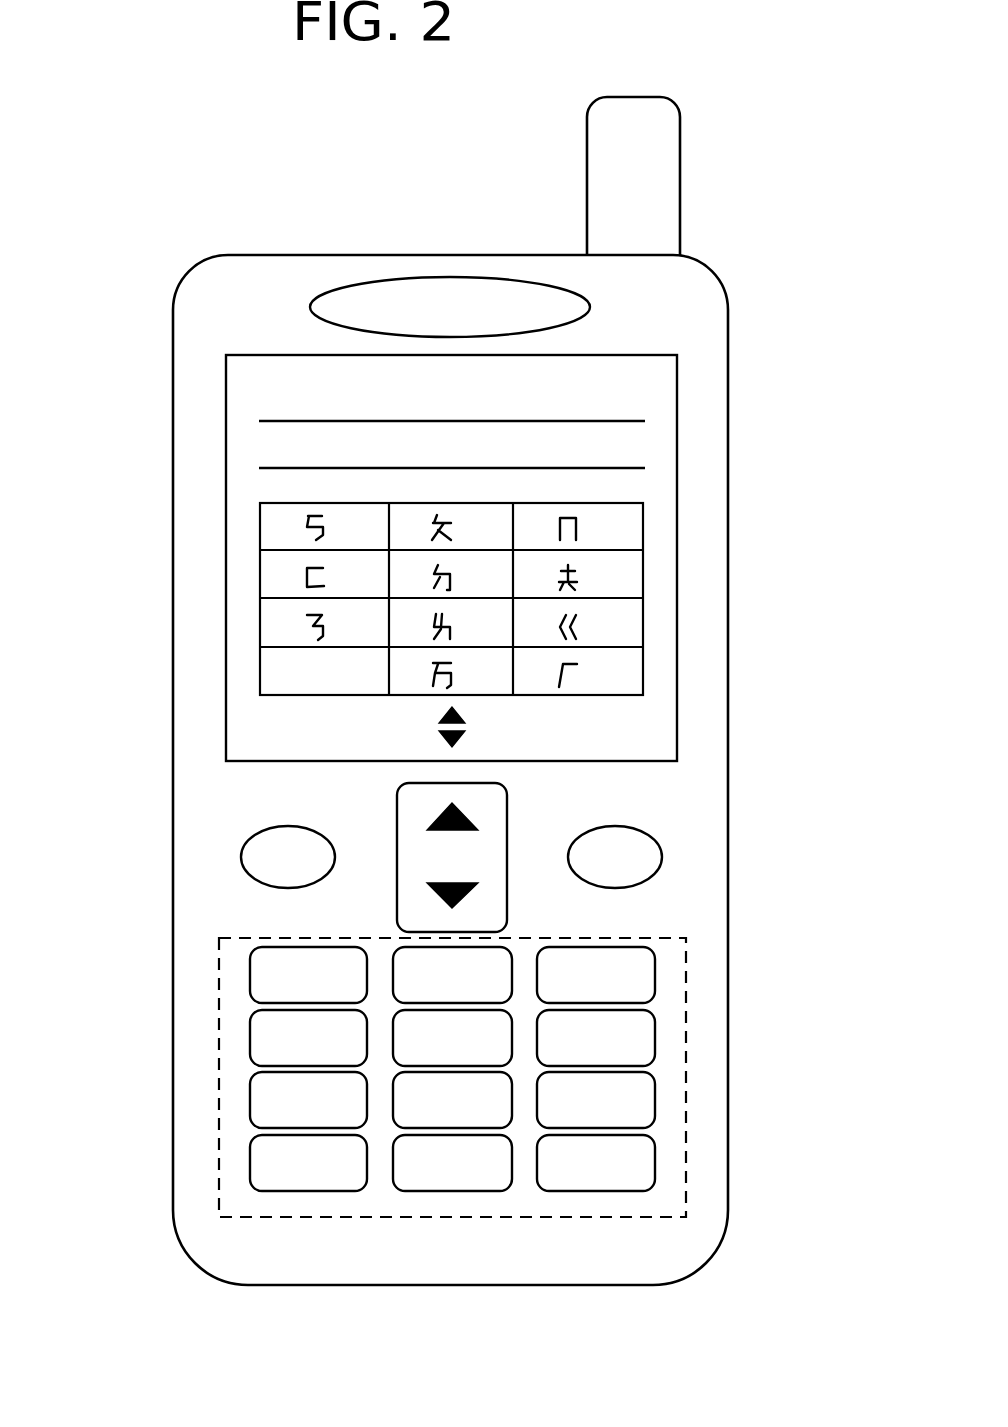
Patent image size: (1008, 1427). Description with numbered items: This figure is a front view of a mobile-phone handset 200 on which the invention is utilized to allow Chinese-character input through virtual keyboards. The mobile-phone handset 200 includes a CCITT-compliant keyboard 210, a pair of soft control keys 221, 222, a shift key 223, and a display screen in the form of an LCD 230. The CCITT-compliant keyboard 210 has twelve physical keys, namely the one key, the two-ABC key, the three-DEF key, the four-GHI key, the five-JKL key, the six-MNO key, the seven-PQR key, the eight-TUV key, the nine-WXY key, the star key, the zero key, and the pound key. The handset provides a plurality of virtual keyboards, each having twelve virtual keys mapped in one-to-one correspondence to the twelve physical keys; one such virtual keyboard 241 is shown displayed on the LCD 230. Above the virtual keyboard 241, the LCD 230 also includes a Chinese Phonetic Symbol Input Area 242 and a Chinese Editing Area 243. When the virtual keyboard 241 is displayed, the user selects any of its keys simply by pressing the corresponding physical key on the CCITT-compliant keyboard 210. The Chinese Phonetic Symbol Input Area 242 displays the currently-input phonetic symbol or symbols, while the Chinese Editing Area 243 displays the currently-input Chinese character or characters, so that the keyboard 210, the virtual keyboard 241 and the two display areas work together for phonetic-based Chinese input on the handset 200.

The mobile-phone handset 200 is at (802, 81).
The CCITT-compliant keyboard 210 is at (686, 1065).
The control key (SOFT) 221 is at (243, 855).
The control key (SOFT) 222 is at (662, 857).
The shift key 223 is at (507, 812).
The LCD 230 is at (226, 576).
The virtual keyboard 241 is at (643, 533).
The Chinese Phonetic Symbol Input Area 242 is at (620, 468).
The Chinese Editing Area 243 is at (603, 421).